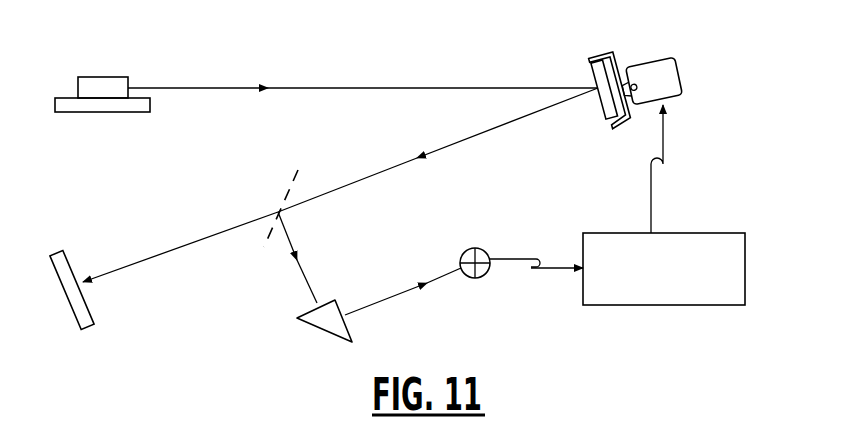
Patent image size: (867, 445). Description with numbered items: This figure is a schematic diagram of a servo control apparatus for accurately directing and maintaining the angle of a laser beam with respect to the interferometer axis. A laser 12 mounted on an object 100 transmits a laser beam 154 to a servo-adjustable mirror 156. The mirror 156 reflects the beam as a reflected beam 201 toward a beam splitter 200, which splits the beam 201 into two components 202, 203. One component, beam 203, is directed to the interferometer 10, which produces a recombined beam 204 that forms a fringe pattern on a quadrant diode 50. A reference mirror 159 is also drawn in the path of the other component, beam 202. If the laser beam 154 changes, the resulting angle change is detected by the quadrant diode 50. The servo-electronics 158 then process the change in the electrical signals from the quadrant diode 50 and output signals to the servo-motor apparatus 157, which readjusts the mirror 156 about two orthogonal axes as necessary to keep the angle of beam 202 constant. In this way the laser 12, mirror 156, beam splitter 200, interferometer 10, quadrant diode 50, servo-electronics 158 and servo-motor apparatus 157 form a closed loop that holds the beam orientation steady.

The laser 12 is at (110, 77).
The object 100 is at (121, 112).
The laser beam 154 is at (360, 88).
The servo-adjustable mirror 156 is at (598, 74).
The servo-motor apparatus 157 is at (681, 72).
The servo-electronics 158 is at (685, 233).
The reference mirror 159 is at (73, 266).
The beam splitter 200 is at (283, 207).
The reflected beam 201 is at (484, 132).
The beam component 202 is at (221, 232).
The beam component 203 is at (293, 239).
The recombined beam 204 is at (398, 298).
The interferometer 10 is at (333, 337).
The quadrant diode 50 is at (470, 250).